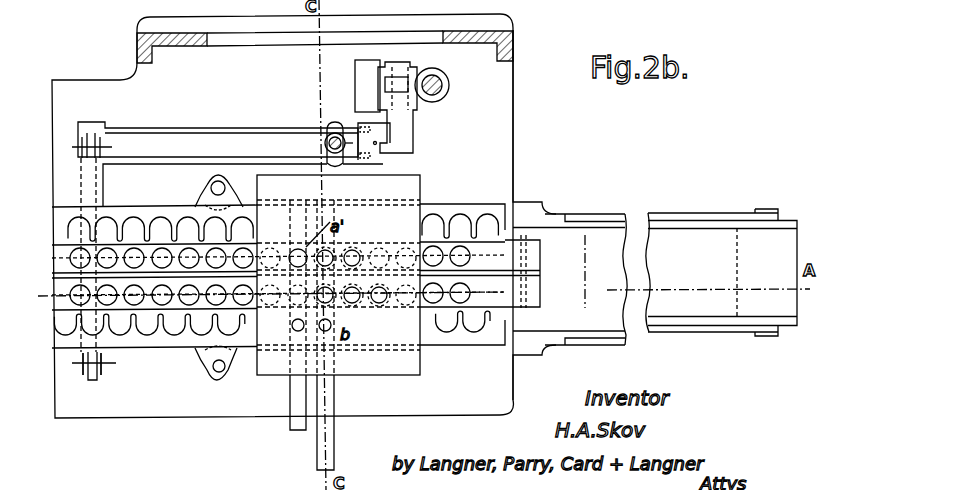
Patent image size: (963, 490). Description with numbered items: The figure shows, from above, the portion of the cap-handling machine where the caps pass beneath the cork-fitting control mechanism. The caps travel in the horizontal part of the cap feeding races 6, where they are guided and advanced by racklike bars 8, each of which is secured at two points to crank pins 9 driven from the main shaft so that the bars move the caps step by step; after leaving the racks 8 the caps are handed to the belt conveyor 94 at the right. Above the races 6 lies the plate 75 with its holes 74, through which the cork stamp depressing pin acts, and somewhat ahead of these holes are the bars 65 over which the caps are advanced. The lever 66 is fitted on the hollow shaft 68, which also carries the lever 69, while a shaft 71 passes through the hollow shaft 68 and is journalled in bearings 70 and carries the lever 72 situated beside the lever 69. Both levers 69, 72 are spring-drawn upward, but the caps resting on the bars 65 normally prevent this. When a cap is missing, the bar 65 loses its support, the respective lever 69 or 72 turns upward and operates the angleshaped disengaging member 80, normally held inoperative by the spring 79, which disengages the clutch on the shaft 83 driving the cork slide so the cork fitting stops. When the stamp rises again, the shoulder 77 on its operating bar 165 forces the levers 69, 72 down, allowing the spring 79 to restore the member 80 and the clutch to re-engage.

The cap feeding race 6 is at (532, 248).
The racklike bar 8 is at (125, 210).
The crank pin 9 is at (218, 378).
The bar 65 is at (265, 250).
The lever 66 is at (158, 255).
The hollow shaft 68 is at (79, 185).
The lever 69 is at (160, 148).
The bearing 70 is at (112, 384).
The shaft 71 is at (103, 363).
The lever 72 is at (236, 131).
The hole 74 is at (328, 298).
The plate 75 is at (413, 183).
The shoulder 77 is at (335, 124).
The spring 79 is at (376, 144).
The disengaging member 80 is at (402, 130).
The shaft 83 is at (443, 80).
The belt conveyor 94 is at (677, 313).
The operating bar 165 is at (326, 143).